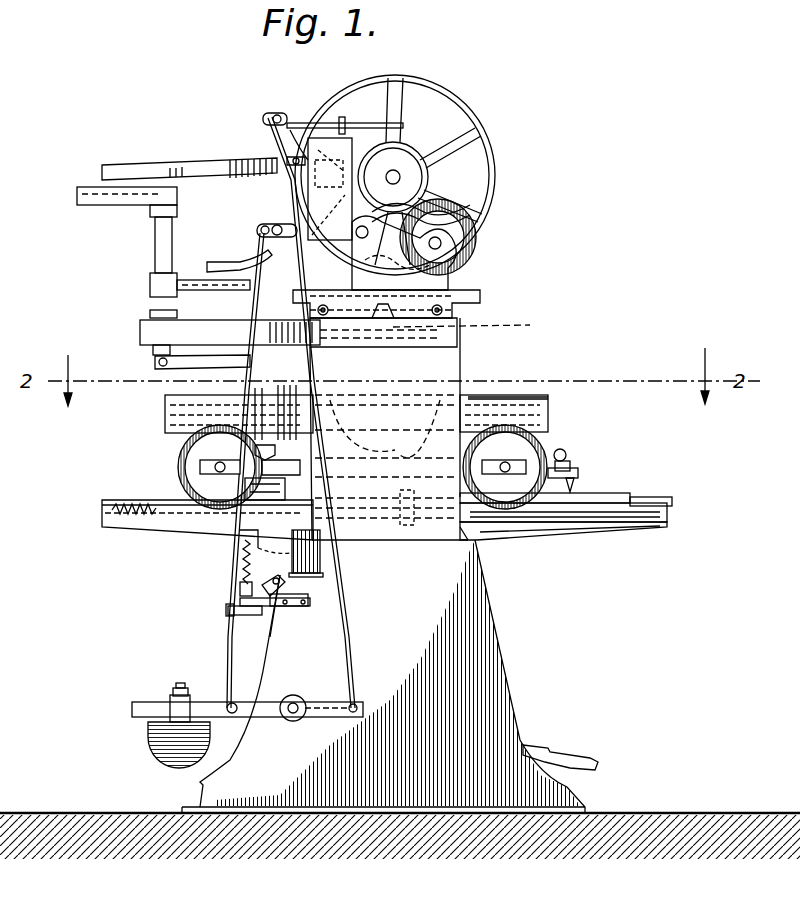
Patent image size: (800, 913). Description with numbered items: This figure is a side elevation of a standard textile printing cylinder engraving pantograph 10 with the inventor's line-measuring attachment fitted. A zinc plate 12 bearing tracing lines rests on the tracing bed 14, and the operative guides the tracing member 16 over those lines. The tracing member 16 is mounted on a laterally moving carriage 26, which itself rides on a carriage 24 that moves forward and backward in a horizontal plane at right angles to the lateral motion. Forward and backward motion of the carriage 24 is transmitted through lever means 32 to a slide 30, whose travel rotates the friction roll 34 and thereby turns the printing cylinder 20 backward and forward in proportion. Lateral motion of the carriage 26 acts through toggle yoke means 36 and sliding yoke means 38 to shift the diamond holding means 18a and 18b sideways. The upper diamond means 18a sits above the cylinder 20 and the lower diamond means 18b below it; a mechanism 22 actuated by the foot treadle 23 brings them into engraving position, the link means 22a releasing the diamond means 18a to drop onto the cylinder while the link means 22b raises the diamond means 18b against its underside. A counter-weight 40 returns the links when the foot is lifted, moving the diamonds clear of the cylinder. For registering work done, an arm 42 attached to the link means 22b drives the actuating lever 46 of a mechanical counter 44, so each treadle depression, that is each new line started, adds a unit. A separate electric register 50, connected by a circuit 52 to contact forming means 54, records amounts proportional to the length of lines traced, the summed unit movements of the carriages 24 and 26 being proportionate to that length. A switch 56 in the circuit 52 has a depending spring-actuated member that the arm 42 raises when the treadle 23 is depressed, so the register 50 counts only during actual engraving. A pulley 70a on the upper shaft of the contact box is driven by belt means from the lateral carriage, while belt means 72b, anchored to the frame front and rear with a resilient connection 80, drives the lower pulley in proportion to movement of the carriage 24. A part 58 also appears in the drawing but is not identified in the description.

The pantograph 10 is at (505, 628).
The zinc plate 12 is at (605, 490).
The tracing bed 14 is at (640, 495).
The tracing member 16 is at (578, 470).
The upper diamond means 18a is at (395, 127).
The lower diamond means 18b is at (395, 228).
The printing cylinder 20 is at (420, 150).
The mechanism 22 is at (247, 689).
The link means 22a is at (347, 627).
The link means 22b is at (230, 660).
The foot treadle 23 is at (560, 752).
The carriage 24 is at (517, 503).
The carriage 26 is at (498, 412).
The slide 30 is at (483, 290).
The lever means 32 is at (474, 324).
The friction roll 34 is at (480, 257).
The toggle yoke means 36 is at (246, 364).
The sliding yoke means 38 is at (247, 265).
The counter-weight 40 is at (160, 742).
The arm 42 is at (243, 613).
The mechanical counter 44 is at (290, 600).
The actuating lever 46 is at (273, 607).
The electric register 50 is at (310, 552).
The circuit 52 is at (247, 540).
The contact forming means 54 is at (260, 488).
The switch 56 is at (243, 587).
The slide bar 58 is at (243, 600).
The pulley 70a is at (283, 453).
The belt means 72b is at (180, 510).
The resilient connection 80 is at (140, 505).